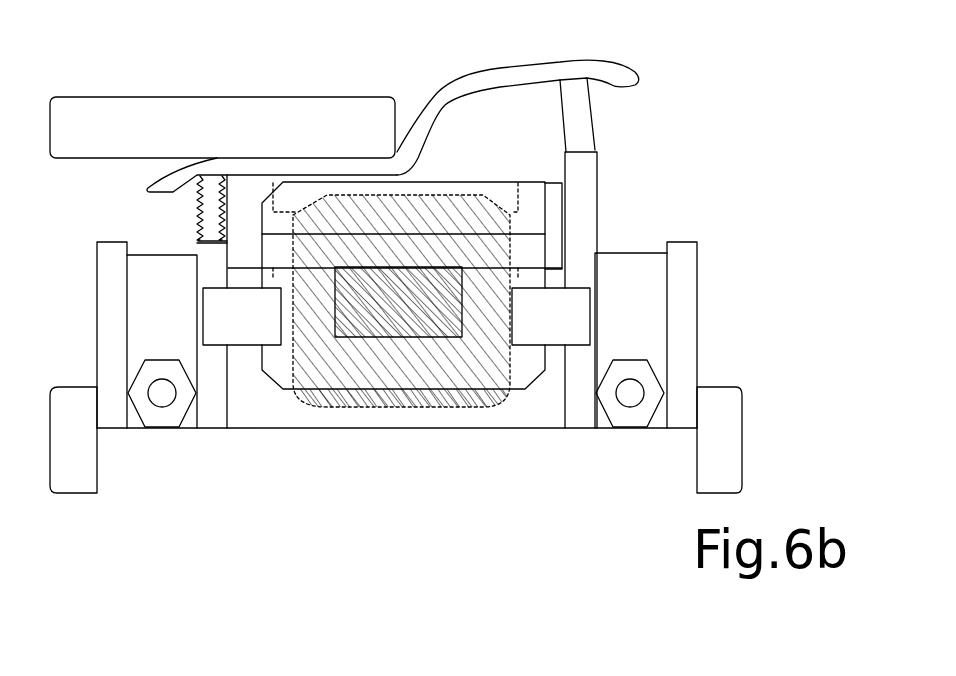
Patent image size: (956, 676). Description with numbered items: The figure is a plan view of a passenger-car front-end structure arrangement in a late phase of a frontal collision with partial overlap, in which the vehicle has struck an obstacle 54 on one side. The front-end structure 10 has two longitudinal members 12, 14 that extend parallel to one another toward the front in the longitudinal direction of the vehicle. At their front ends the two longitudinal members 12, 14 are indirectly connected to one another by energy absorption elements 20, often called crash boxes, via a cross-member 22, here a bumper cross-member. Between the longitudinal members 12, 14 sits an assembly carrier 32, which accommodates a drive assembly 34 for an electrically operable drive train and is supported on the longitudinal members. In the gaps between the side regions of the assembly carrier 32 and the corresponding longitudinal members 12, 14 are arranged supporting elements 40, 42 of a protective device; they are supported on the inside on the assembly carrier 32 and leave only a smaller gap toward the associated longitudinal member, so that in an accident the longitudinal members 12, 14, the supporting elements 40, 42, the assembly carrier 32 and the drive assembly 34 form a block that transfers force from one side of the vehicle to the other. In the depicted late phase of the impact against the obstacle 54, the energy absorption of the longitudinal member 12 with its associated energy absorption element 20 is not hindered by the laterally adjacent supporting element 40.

The front-end structure 10 is at (746, 152).
The longitudinal member 12 is at (210, 355).
The longitudinal member 14 is at (580, 187).
The energy absorption element 20 is at (200, 213).
The cross-member 22 is at (473, 80).
The assembly carrier 32 is at (517, 390).
The drive assembly 34 is at (390, 407).
The supporting element 40 is at (242, 254).
The supporting element 42 is at (553, 248).
The obstacle 54 is at (182, 113).